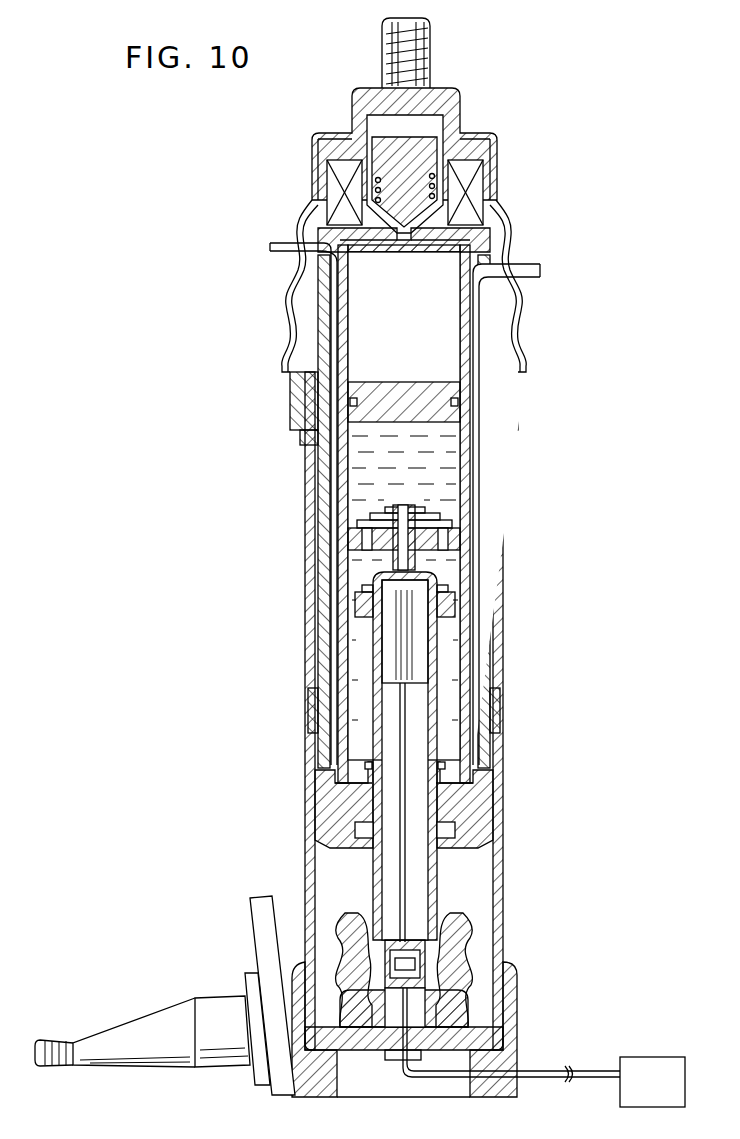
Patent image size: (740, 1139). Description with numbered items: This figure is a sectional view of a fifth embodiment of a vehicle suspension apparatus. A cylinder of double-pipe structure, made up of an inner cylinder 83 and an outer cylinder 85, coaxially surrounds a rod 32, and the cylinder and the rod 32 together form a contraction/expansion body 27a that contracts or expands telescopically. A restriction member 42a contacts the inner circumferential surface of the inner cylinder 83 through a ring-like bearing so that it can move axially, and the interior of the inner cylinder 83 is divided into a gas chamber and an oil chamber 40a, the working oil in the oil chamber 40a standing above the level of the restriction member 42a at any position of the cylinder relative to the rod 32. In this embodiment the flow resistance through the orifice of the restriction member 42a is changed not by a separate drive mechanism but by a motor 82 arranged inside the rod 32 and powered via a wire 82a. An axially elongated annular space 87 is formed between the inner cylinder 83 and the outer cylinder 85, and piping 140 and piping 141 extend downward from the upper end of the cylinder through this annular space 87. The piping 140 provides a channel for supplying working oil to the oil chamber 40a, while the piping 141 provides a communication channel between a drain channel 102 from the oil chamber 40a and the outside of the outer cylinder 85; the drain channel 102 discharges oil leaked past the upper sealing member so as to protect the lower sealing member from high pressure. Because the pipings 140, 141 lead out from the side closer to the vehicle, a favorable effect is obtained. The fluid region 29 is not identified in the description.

The contraction/expansion body 27a is at (513, 533).
The fluid 29 is at (453, 706).
The rod 32 is at (373, 640).
The oil chamber 40a is at (455, 633).
The restriction member 42a is at (445, 513).
The motor 82 is at (392, 665).
The wire 82a is at (408, 892).
The inner cylinder 83 is at (466, 482).
The outer cylinder 85 is at (322, 330).
The annular space 87 is at (333, 510).
The drain channel 102 is at (343, 786).
The piping 140 is at (482, 660).
The piping 141 is at (335, 482).